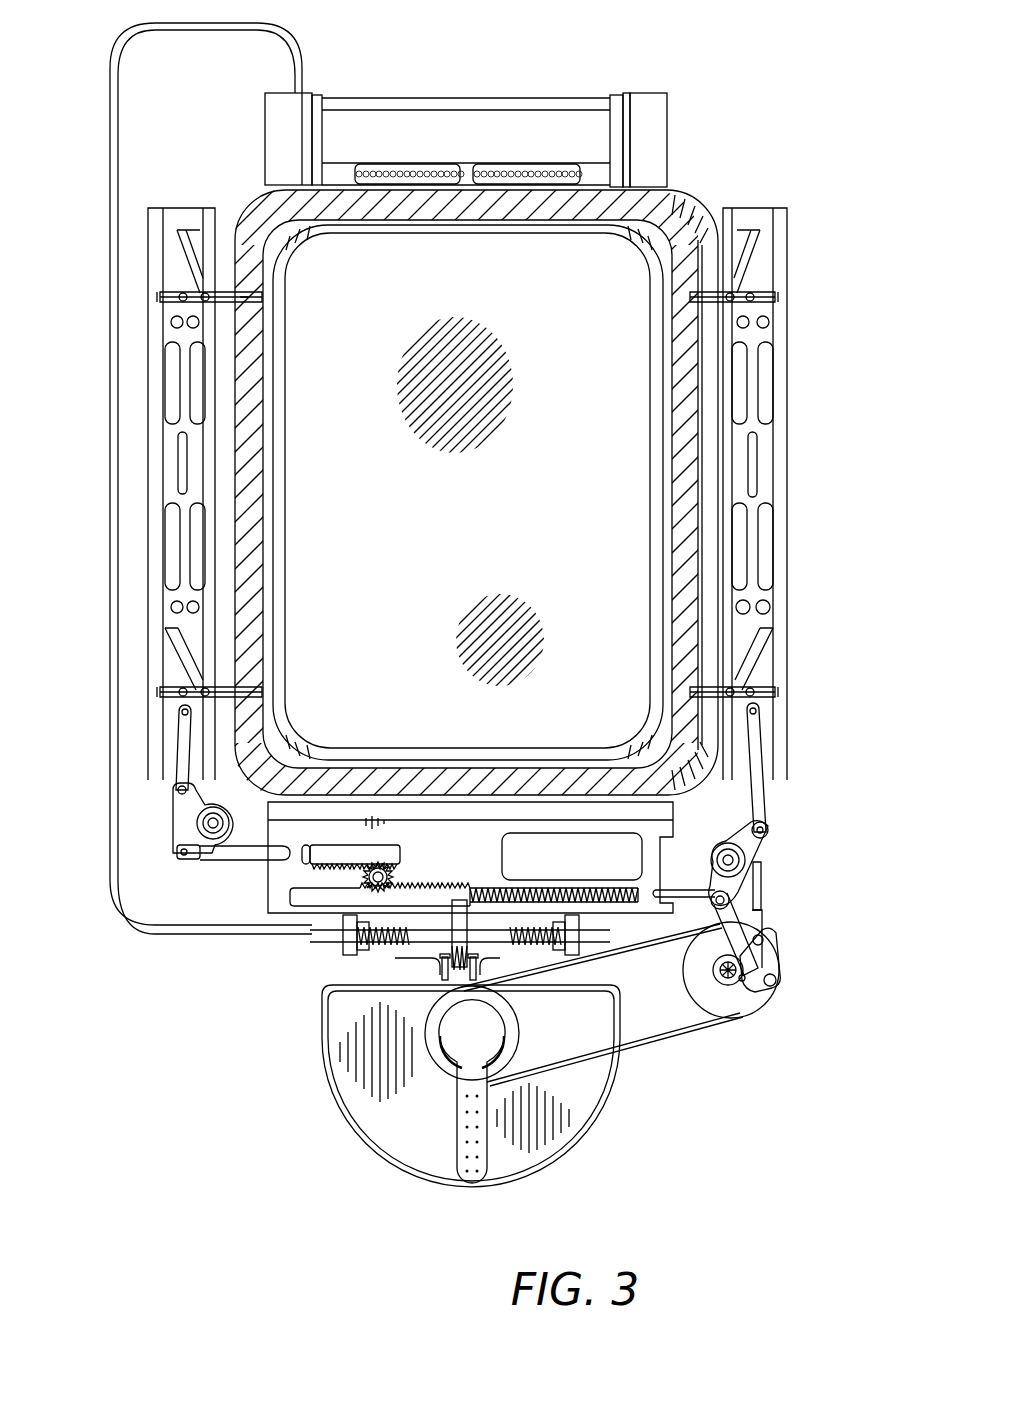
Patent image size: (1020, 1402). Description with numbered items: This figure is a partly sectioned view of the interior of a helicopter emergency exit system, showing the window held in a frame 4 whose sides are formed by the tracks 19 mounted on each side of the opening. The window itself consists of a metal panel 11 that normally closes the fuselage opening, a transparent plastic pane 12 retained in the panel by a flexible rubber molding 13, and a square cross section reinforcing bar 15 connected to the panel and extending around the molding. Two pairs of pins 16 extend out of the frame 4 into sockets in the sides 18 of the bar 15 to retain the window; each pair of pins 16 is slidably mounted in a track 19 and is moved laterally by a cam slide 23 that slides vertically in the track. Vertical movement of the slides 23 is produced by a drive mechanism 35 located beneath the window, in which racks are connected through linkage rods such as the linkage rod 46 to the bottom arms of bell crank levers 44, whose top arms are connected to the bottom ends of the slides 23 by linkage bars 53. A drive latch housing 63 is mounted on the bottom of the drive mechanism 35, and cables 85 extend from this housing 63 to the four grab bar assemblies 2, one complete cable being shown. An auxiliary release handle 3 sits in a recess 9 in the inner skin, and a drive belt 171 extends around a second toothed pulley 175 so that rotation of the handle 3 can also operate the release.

The grab bar assembly 2 is at (582, 76).
The auxiliary release handle 3 is at (460, 1130).
The frame 4 is at (697, 180).
The recess 9 is at (586, 1130).
The metal panel 11 is at (292, 234).
The transparent plastic pane 12 is at (484, 509).
The flexible rubber molding 13 is at (280, 560).
The reinforcing bar 15 is at (467, 212).
The pin 16 is at (257, 298).
The side of the bar 18 is at (248, 430).
The track 19 is at (155, 208).
The cam slide 23 is at (172, 437).
The drive mechanism 35 is at (240, 908).
The bell crank lever 44 is at (183, 828).
The linkage rod 46 is at (227, 857).
The linkage bar 53 is at (183, 745).
The housing 63 is at (397, 957).
The cable 85 is at (124, 906).
The drive belt 171 is at (665, 1037).
The second toothed pulley 175 is at (718, 1005).